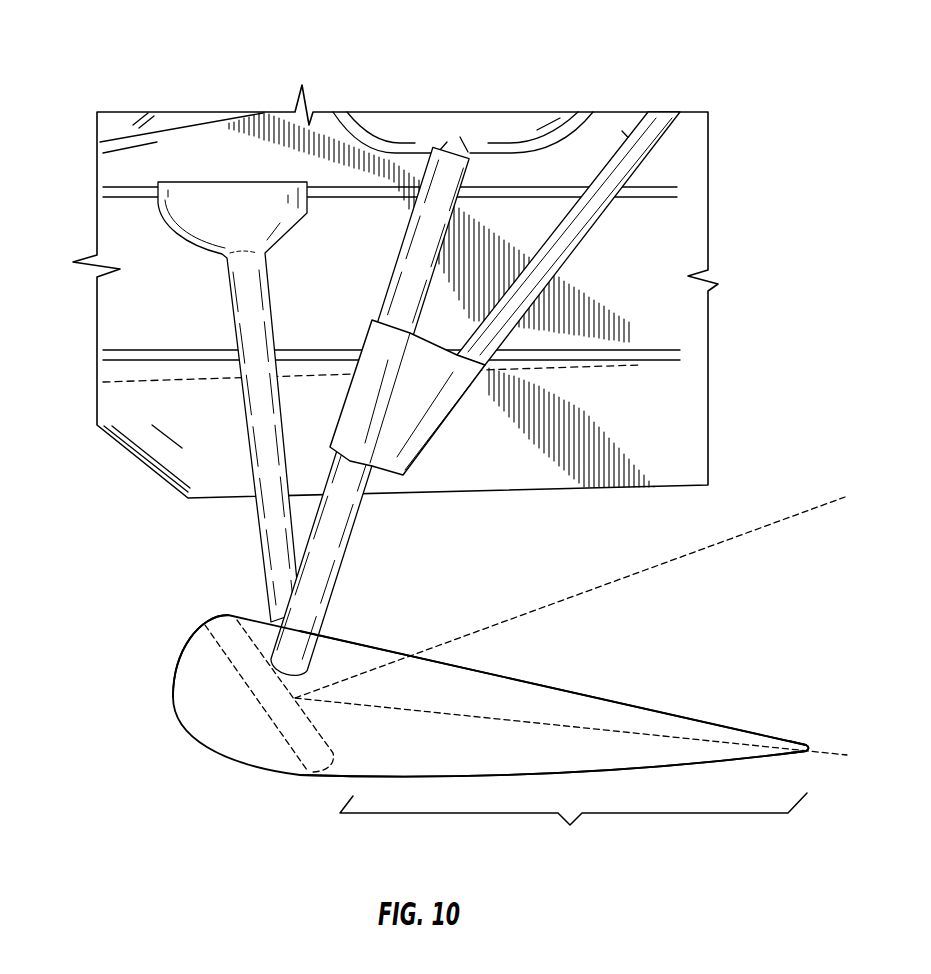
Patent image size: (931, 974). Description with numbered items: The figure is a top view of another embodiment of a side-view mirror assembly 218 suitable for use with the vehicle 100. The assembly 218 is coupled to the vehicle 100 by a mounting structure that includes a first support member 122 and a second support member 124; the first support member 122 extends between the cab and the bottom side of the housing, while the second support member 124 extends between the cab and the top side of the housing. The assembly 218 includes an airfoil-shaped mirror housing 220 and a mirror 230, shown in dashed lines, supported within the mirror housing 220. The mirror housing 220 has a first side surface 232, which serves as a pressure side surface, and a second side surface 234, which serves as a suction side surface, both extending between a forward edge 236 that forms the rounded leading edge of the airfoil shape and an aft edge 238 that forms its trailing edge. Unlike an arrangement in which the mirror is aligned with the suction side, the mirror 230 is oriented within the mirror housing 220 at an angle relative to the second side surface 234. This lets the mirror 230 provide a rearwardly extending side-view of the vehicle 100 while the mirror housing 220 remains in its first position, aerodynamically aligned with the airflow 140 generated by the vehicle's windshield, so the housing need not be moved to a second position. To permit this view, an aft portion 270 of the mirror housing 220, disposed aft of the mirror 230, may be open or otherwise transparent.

The vehicle 100 is at (378, 350).
The first support member 122 is at (237, 312).
The second support member 124 is at (360, 502).
The airflow 140 is at (142, 538).
The side-view mirror assembly 218 is at (463, 685).
The airfoil-shaped mirror housing 220 is at (472, 666).
The mirror 230 is at (267, 710).
The first side surface 232 is at (268, 770).
The second side surface 234 is at (360, 644).
The forward edge 236 is at (175, 668).
The aft edge 238 is at (809, 754).
The aft portion 270 is at (570, 825).